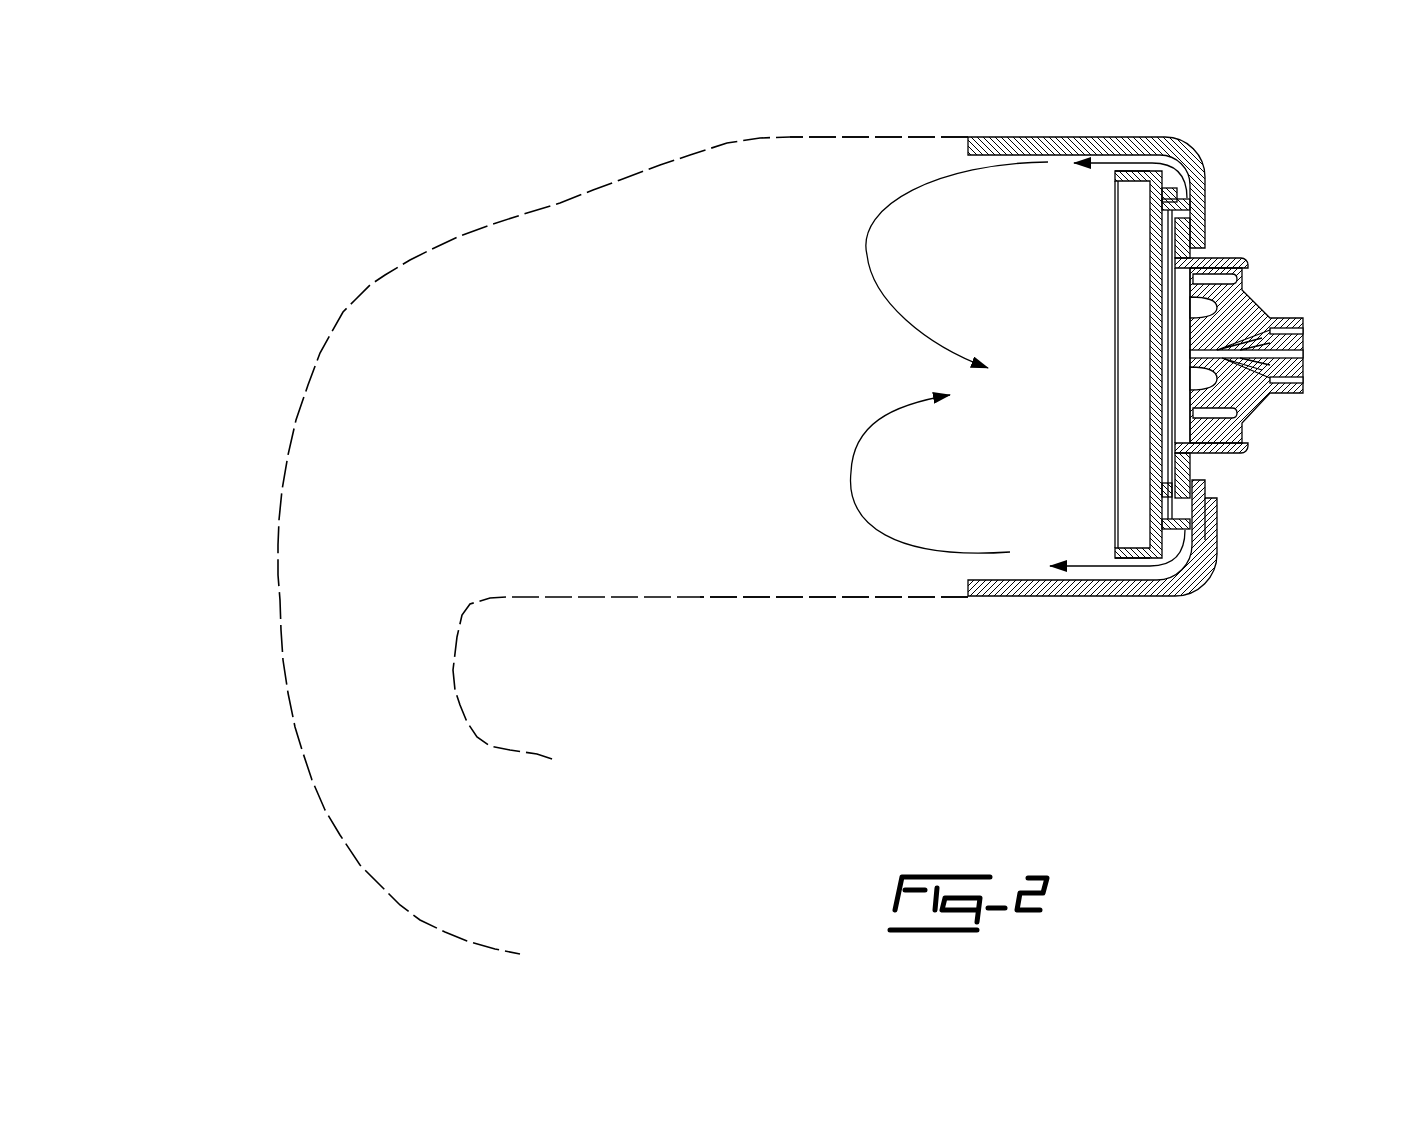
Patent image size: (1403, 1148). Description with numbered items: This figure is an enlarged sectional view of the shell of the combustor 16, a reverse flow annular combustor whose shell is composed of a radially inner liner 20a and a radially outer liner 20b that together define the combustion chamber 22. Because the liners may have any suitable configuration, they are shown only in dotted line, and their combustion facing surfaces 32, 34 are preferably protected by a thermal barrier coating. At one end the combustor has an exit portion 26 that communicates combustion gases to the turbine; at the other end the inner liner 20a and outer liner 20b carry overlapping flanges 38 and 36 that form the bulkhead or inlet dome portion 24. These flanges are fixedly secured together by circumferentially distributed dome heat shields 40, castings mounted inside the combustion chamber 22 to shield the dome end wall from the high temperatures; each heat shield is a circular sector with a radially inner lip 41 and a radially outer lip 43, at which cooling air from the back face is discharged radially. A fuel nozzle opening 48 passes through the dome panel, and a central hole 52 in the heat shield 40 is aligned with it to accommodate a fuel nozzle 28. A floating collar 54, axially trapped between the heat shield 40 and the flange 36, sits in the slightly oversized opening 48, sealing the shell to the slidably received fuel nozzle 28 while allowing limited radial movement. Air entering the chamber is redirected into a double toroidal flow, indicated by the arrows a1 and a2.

The combustor 16 is at (316, 291).
The radially outer liner 20b is at (861, 119).
The radially inner liner 20a is at (819, 612).
The combustion chamber 22 is at (766, 305).
The inlet dome portion 24 is at (1187, 221).
The exit portion 26 is at (522, 867).
The fuel nozzle 28 is at (1269, 301).
The combustion facing surface of inner liner 32 is at (800, 575).
The combustion facing surface of outer liner 34 is at (866, 148).
The flange of outer liner 36 is at (1224, 183).
The flange of inner liner 38 is at (1234, 551).
The dome heat shield 40 is at (1137, 200).
The radially inner lip 41 is at (1112, 542).
The radially outer lip 43 is at (1124, 184).
The fuel nozzle opening 48 is at (1210, 473).
The central hole 52 is at (1167, 253).
The floating collar 54 is at (1232, 253).
The flow arrow a1 is at (1104, 160).
The flow arrow a2 is at (949, 357).